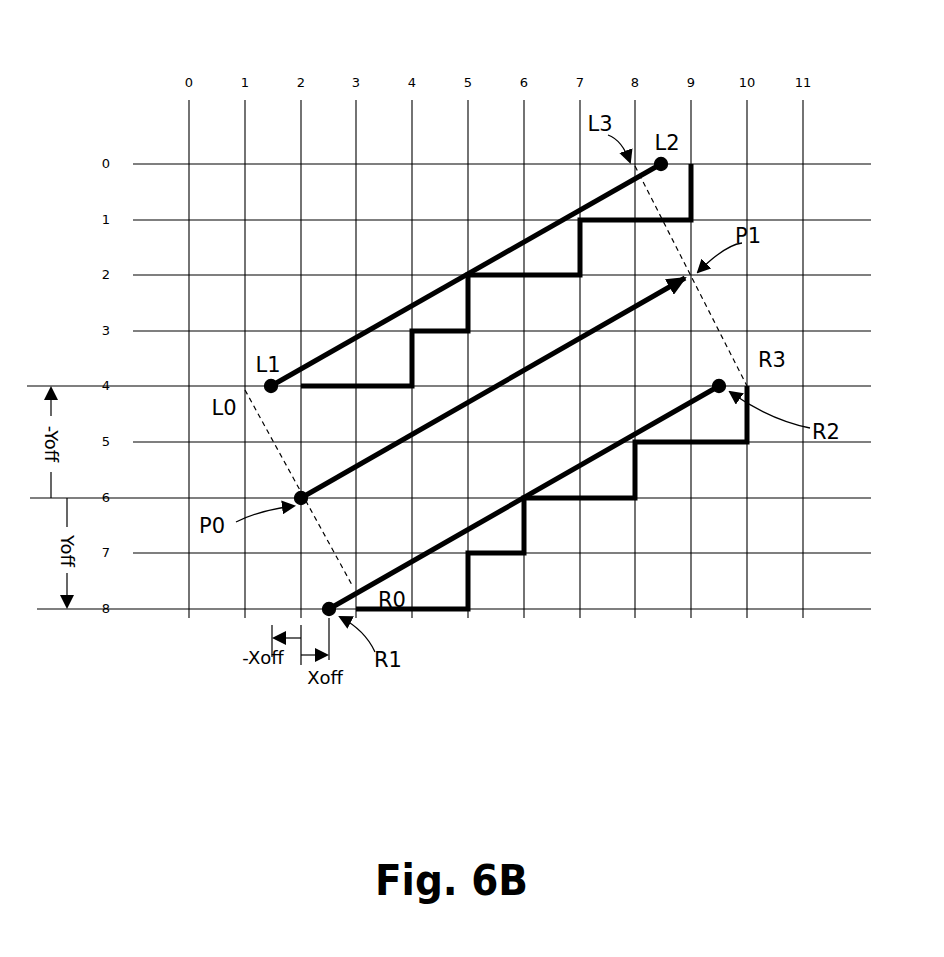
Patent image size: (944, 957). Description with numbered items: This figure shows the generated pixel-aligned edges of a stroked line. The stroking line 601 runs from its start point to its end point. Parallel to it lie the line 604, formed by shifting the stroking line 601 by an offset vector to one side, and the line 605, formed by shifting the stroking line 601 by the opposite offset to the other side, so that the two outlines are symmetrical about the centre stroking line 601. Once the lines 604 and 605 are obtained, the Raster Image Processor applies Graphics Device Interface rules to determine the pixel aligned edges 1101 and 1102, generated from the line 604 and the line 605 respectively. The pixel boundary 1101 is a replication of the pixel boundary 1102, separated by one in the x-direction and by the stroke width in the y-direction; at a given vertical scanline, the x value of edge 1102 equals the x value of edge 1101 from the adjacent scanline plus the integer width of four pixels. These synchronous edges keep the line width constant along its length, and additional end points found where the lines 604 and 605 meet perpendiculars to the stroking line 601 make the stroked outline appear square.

The pixel aligned edge 1101 is at (507, 272).
The line 604 is at (410, 308).
The stroking line 601 is at (597, 330).
The line 605 is at (600, 454).
The pixel aligned edge 1102 is at (563, 500).